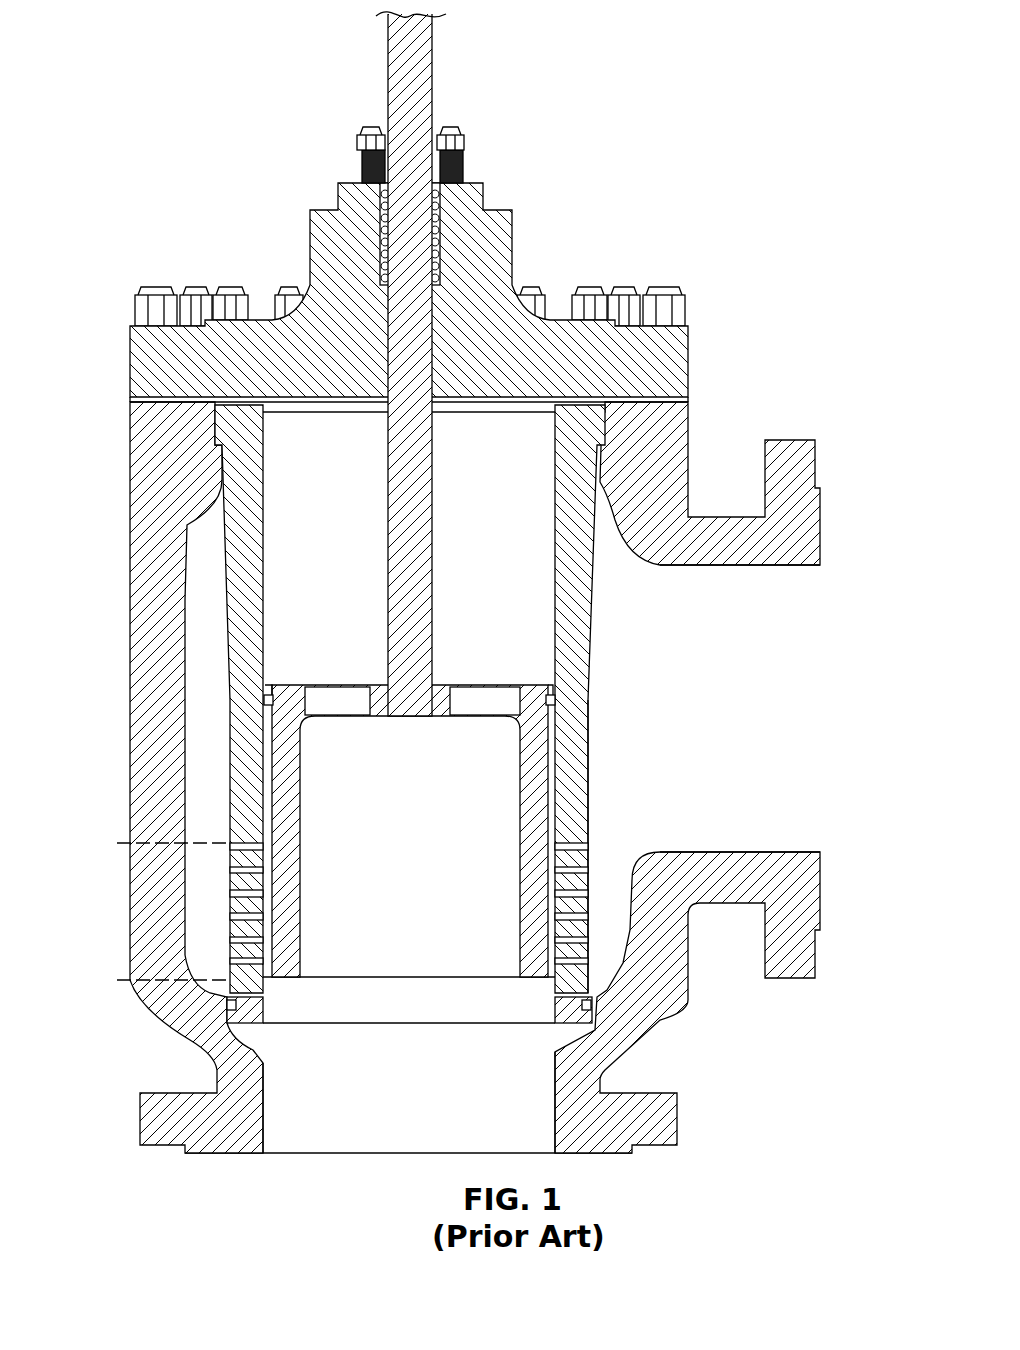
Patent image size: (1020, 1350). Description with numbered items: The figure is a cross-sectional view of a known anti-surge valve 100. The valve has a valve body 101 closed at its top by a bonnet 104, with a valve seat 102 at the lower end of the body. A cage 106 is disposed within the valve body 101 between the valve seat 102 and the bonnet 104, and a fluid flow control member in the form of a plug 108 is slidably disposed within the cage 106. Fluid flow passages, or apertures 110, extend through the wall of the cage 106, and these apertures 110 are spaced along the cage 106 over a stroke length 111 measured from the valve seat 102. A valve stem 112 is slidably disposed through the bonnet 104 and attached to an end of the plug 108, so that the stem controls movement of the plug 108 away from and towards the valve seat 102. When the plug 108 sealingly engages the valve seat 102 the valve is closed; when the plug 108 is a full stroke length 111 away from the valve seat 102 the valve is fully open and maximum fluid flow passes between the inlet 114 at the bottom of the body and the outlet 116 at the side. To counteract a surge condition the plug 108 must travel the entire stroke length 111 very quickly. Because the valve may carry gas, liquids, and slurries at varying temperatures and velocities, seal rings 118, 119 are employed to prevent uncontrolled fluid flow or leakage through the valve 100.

The anti-surge valve 100 is at (718, 427).
The valve body 101 is at (662, 1127).
The valve seat 102 is at (545, 1025).
The bonnet 104 is at (688, 330).
The cage 106 is at (588, 852).
The plug 108 is at (462, 685).
The apertures 110 is at (592, 828).
The stroke length 111 is at (123, 843).
The valve stem 112 is at (420, 205).
The inlet 114 is at (412, 1148).
The outlet 116 is at (812, 690).
The seal ring 118 is at (600, 1004).
The seal ring 119 is at (560, 703).